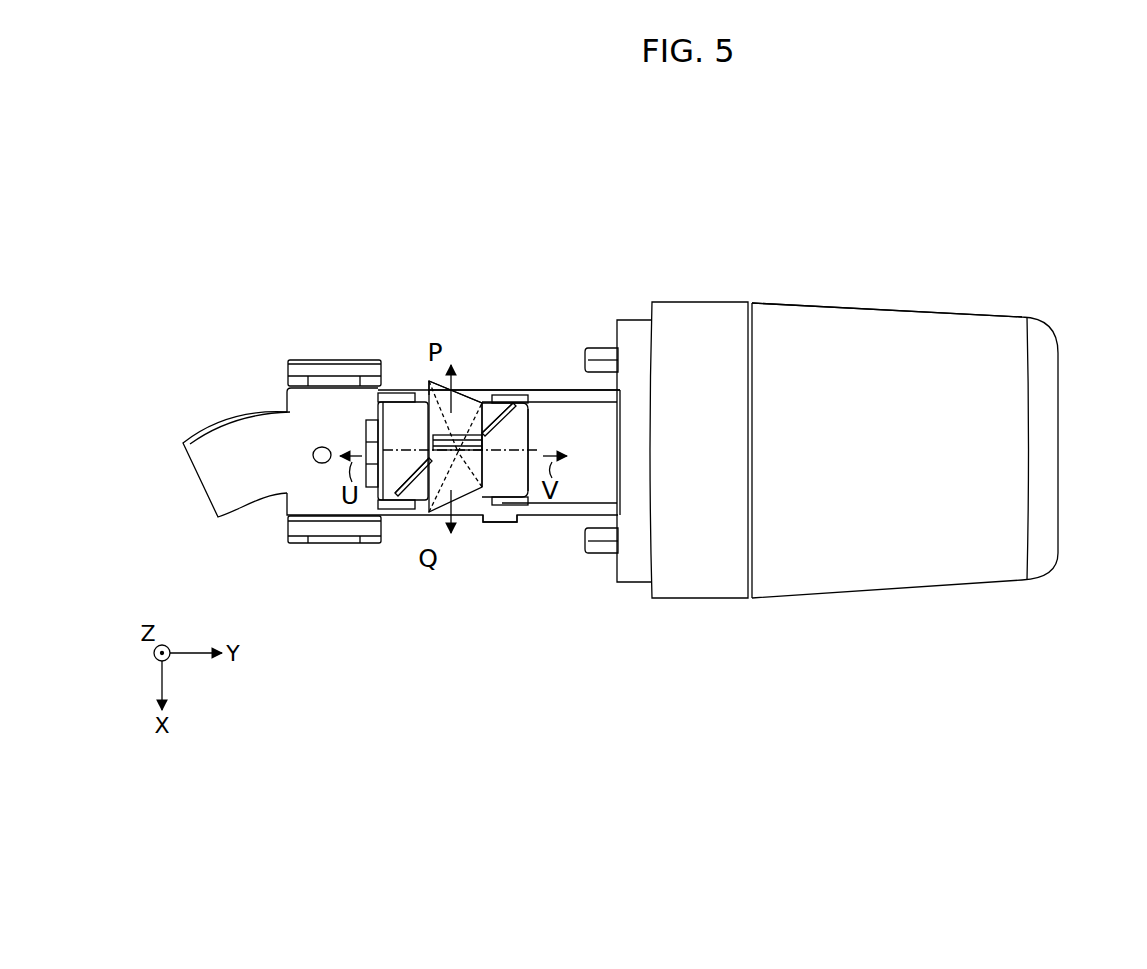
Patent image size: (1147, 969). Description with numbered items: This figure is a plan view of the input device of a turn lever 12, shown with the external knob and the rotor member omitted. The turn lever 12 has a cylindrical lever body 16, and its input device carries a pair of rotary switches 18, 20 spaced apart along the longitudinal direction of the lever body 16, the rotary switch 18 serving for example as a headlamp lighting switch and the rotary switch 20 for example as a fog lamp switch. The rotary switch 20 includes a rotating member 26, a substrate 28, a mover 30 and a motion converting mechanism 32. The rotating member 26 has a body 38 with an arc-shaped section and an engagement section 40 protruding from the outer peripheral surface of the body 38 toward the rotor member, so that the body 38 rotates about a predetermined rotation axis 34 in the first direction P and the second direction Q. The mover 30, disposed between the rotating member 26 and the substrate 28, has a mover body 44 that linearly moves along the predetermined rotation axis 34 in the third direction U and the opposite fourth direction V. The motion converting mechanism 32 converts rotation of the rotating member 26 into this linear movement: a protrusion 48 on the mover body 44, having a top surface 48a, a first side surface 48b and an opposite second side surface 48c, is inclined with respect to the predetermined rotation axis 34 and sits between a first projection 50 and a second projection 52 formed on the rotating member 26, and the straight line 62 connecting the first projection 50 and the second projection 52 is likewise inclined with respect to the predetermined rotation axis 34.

The turn lever 12 is at (1078, 320).
The lever body 16 is at (720, 587).
The rotary switch 18 is at (940, 567).
The rotary switch 20 is at (579, 566).
The rotating member 26 is at (472, 417).
The substrate 28 is at (303, 510).
The mover 30 is at (390, 415).
The motion converting mechanism 32 is at (522, 380).
The predetermined rotation axis 34 is at (528, 447).
The body 38 is at (483, 430).
The engagement section 40 is at (528, 440).
The mover body 44 is at (415, 392).
The protrusion 48 is at (418, 487).
The top surface 48a is at (408, 500).
The first side surface 48b is at (528, 410).
The second side surface 48c is at (492, 410).
The first projection 50 is at (460, 455).
The second projection 52 is at (427, 380).
The straight line 62 is at (503, 520).